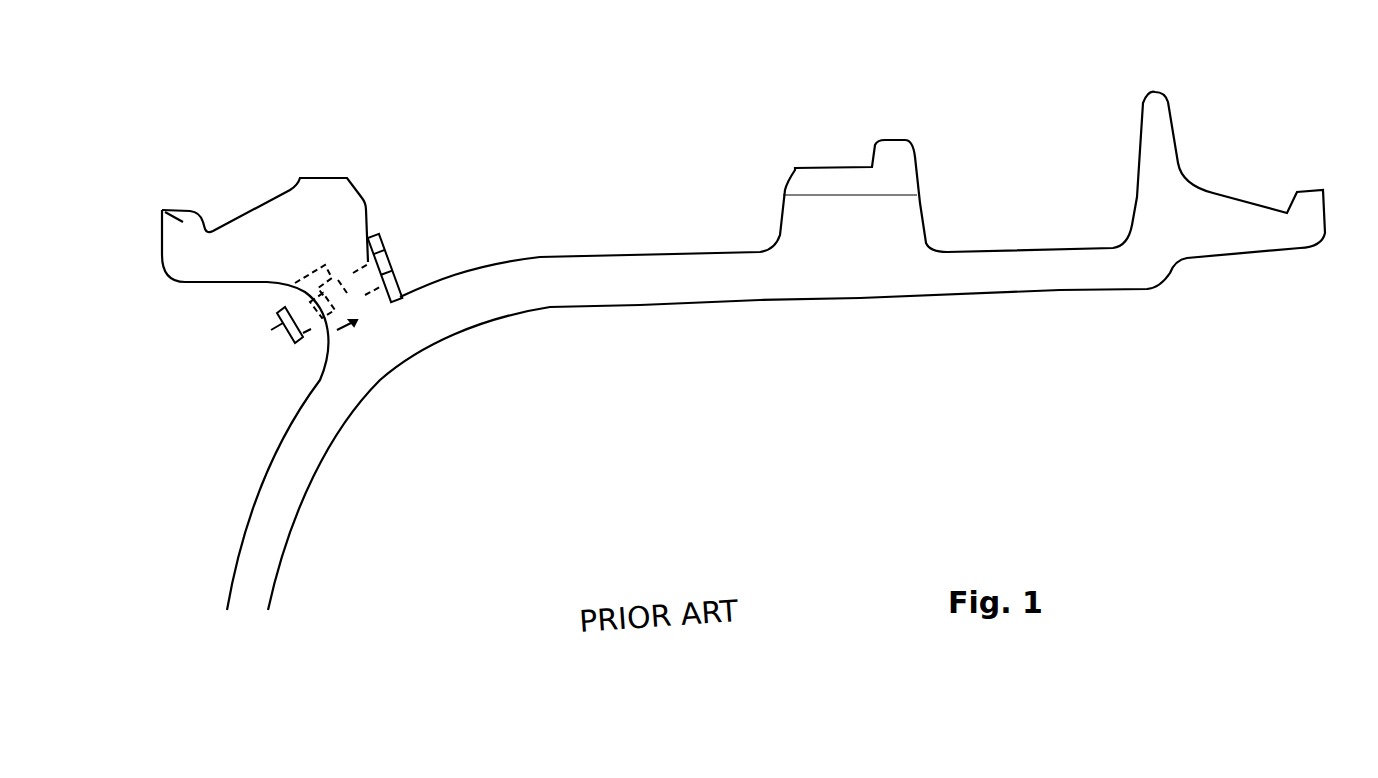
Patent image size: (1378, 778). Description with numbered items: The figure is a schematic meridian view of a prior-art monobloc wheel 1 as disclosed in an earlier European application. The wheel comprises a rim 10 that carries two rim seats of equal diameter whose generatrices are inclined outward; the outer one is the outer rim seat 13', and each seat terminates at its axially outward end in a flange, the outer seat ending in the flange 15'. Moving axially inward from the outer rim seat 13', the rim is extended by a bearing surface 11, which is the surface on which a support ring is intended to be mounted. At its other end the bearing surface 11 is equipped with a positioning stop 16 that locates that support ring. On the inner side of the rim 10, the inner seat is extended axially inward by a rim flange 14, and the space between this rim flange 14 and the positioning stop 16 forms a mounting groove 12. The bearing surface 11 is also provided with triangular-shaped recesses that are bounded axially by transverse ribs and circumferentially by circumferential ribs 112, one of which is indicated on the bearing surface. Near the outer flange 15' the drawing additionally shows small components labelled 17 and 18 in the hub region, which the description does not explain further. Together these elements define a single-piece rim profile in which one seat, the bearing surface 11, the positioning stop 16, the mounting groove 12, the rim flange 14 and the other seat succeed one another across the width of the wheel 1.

The monobloc wheel 1 is at (577, 368).
The rim 10 is at (805, 285).
The bearing surface 11 is at (543, 173).
The circumferential ribs 112 is at (322, 178).
The mounting groove 12 is at (1003, 242).
The outer rim seat 13' is at (223, 163).
The rim flange 14 is at (1153, 108).
The outer flange 15' is at (111, 174).
The positioning stop 16 is at (893, 155).
The fastener 17 is at (278, 320).
The locking member 18 is at (337, 331).